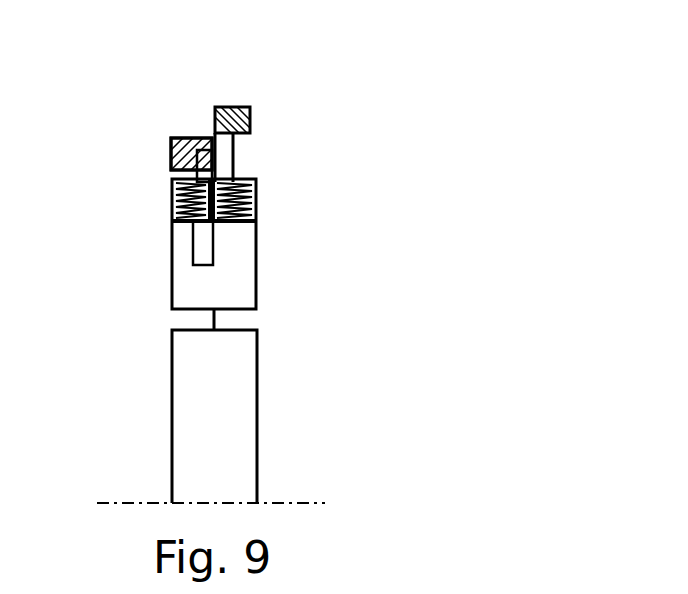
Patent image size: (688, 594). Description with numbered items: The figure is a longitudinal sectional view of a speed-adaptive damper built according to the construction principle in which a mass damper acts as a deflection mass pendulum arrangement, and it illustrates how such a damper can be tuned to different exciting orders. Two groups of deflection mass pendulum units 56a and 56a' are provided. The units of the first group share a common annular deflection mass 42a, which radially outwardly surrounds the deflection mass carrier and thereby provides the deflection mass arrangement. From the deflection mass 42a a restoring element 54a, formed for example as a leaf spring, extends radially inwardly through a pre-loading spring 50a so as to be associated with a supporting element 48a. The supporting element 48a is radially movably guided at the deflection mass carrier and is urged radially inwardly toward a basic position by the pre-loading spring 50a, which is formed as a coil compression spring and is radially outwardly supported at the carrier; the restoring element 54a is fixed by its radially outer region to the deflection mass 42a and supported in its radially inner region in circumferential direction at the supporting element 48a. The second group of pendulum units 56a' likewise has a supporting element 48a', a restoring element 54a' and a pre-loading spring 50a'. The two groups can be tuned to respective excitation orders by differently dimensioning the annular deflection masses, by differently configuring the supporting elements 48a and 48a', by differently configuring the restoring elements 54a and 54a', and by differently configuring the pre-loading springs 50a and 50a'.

The deflection mass pendulum unit 56a is at (276, 273).
The deflection mass pendulum unit 56a' is at (130, 123).
The annular deflection mass 42a is at (243, 108).
The restoring element 54a is at (295, 157).
The restoring element 54a' is at (122, 171).
The pre-loading spring 50a is at (316, 198).
The pre-loading spring 50a' is at (137, 207).
The supporting element 48a is at (283, 243).
The supporting element 48a' is at (158, 245).